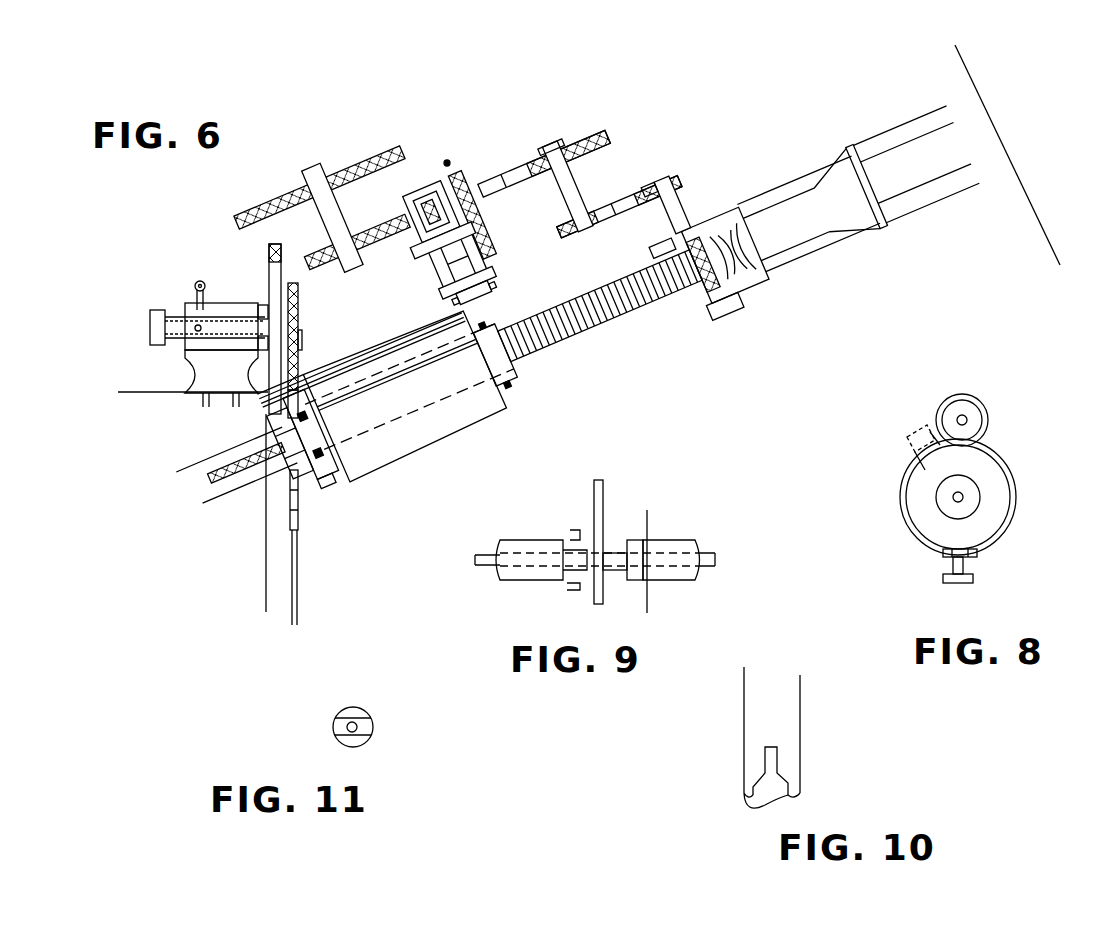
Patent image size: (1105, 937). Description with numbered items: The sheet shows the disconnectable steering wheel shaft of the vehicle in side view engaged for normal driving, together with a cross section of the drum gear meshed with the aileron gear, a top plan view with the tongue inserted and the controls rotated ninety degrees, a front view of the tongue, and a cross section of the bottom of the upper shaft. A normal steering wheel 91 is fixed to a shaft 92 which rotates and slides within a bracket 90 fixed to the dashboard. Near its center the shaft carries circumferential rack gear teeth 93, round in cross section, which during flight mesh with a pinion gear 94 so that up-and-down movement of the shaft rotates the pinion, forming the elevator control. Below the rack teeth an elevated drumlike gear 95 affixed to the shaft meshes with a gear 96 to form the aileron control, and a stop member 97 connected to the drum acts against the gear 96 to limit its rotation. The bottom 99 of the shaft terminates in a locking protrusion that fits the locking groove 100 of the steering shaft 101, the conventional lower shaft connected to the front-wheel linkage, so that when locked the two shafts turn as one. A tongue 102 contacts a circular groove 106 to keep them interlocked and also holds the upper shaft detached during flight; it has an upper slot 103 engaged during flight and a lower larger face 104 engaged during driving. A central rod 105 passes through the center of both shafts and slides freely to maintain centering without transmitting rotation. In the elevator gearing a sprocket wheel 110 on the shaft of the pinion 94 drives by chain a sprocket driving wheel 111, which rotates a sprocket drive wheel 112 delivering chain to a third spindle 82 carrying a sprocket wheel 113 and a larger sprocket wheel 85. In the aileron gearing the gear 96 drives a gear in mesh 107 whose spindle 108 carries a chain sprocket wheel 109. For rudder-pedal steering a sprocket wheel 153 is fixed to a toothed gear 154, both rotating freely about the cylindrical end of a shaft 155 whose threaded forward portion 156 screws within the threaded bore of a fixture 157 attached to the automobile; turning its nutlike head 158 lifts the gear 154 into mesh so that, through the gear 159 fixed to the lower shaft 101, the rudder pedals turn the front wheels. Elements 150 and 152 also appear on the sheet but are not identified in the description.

In FIG. 6, the third spindle 82 is at (340, 210).
In FIG. 6, the sprocket wheel 85 is at (345, 168).
In FIG. 6, the bracket 90 is at (770, 198).
In FIG. 6, the steering wheel 91 is at (1050, 225).
In FIG. 6, the shaft 92 is at (830, 215).
In FIG. 9, the shaft 92 is at (680, 545).
In FIG. 8, the shaft 92 is at (980, 490).
In FIG. 11, the shaft 92 is at (370, 745).
In FIG. 6, the rack gear teeth 93 is at (605, 335).
In FIG. 6, the pinion gear 94 is at (700, 295).
In FIG. 6, the drumlike gear 95 is at (505, 412).
In FIG. 8, the drumlike gear 95 is at (900, 511).
In FIG. 6, the gear 96 is at (470, 295).
In FIG. 8, the gear 96 is at (980, 395).
In FIG. 8, the stop member 97 is at (940, 577).
In FIG. 9, the locking protrusion 99 is at (630, 540).
In FIG. 11, the locking protrusion 99 is at (333, 726).
In FIG. 9, the locking groove 100 is at (575, 548).
In FIG. 6, the steering shaft 101 is at (232, 500).
In FIG. 9, the steering shaft 101 is at (545, 580).
In FIG. 9, the tongue 102 is at (606, 494).
In FIG. 10, the tongue 102 is at (742, 713).
In FIG. 10, the upper slot 103 is at (778, 750).
In FIG. 10, the lower larger face 104 is at (745, 808).
In FIG. 6, the central rod 105 is at (418, 398).
In FIG. 9, the central rod 105 is at (705, 560).
In FIG. 8, the central rod 105 is at (945, 495).
In FIG. 11, the central rod 105 is at (355, 720).
In FIG. 6, the circular groove 106 is at (310, 455).
In FIG. 9, the circular groove 106 is at (645, 585).
In FIG. 6, the gear in mesh 107 is at (425, 215).
In FIG. 6, the spindle 108 is at (418, 240).
In FIG. 6, the chain sprocket wheel 109 is at (490, 227).
In FIG. 6, the sprocket wheel 110 is at (665, 180).
In FIG. 6, the sprocket driving wheel 111 is at (578, 245).
In FIG. 6, the sprocket drive wheel 112 is at (597, 145).
In FIG. 6, the sprocket wheel 113 is at (328, 269).
In FIG. 6, the rod 150 is at (300, 590).
In FIG. 6, the strip 152 is at (298, 520).
In FIG. 6, the sprocket wheel 153 is at (300, 345).
In FIG. 6, the toothed gear 154 is at (268, 257).
In FIG. 6, the shaft 155 is at (262, 328).
In FIG. 6, the forward portion of the shaft 156 is at (200, 325).
In FIG. 6, the fixture 157 is at (188, 376).
In FIG. 6, the nutlike head 158 is at (150, 328).
In FIG. 6, the gear 159 is at (300, 470).